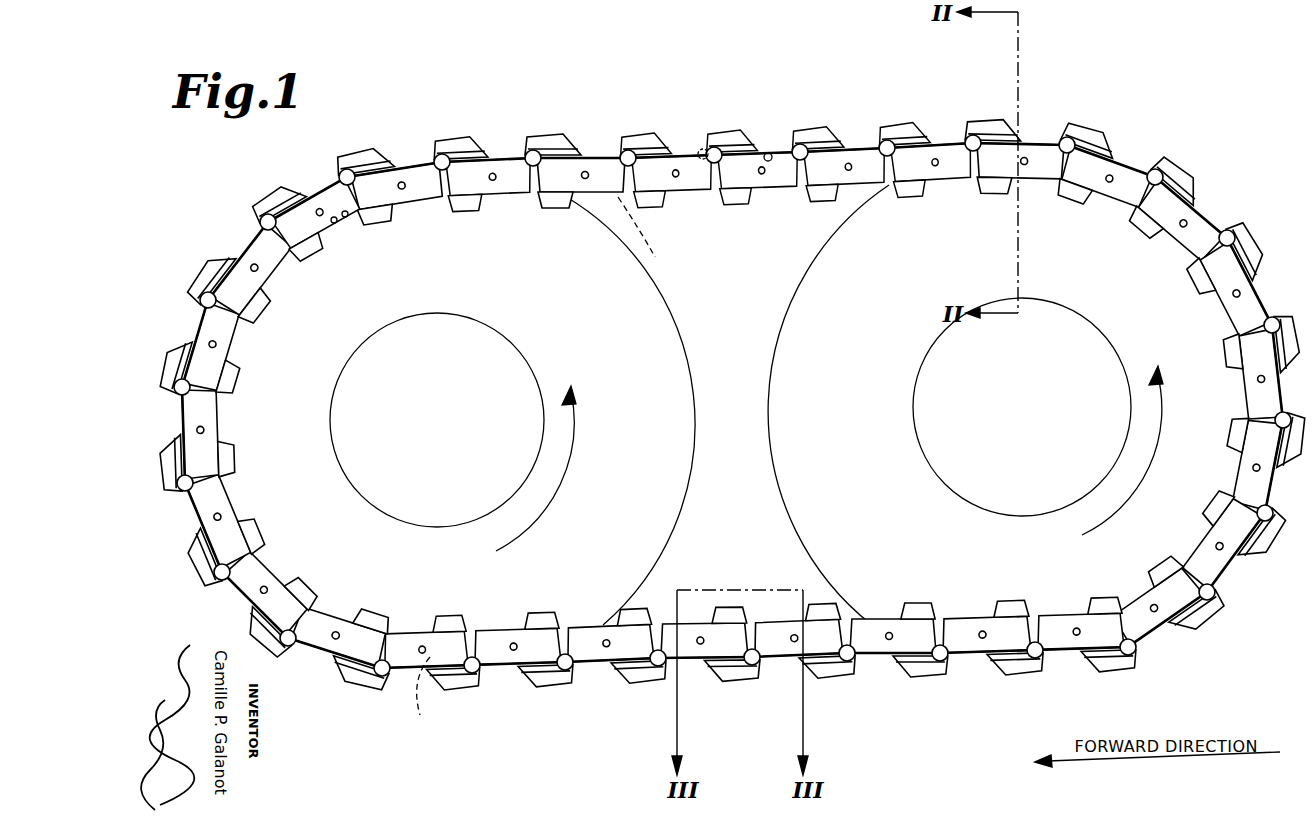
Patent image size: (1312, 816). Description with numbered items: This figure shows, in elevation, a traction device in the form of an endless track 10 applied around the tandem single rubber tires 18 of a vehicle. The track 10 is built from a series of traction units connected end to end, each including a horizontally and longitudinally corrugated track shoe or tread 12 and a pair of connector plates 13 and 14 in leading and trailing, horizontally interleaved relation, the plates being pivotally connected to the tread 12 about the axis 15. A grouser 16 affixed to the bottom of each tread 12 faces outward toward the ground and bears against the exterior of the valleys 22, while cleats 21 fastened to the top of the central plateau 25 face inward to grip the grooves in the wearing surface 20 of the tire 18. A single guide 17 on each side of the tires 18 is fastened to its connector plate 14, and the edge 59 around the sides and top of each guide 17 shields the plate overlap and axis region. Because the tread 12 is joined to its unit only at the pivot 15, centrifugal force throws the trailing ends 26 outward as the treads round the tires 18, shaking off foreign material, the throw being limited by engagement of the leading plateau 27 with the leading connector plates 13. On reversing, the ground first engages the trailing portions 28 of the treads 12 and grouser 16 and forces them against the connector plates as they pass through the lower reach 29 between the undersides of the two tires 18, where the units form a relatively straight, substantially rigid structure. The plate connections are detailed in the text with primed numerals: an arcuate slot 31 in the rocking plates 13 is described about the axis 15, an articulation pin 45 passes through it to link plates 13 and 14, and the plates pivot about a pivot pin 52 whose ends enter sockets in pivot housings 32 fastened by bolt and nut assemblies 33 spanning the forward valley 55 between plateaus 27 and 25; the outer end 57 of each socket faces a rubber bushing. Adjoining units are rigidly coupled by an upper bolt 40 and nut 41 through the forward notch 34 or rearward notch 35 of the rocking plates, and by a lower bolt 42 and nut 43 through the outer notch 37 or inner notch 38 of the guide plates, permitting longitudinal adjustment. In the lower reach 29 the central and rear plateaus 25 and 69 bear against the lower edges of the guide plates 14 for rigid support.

The track 10 is at (420, 160).
The track shoe or tread 12 is at (392, 153).
The leading connector plate 13 is at (287, 257).
The trailing connector plate 14 is at (1097, 167).
The axis 15 is at (530, 155).
The grouser 16 is at (263, 200).
The guide 17 is at (303, 240).
The tire 18 is at (686, 457).
The wearing surface 20 is at (668, 546).
The cleat 21 is at (425, 696).
The valley 22 is at (1266, 511).
The central plateau 25 is at (200, 360).
The trailing end 26 is at (227, 250).
The leading plateau 27 is at (250, 247).
The trailing portion 28 is at (1183, 633).
The lower reach 29 is at (697, 647).
The arcuate slot 31 is at (785, 183).
The pivot housing 32 is at (625, 157).
The bolt and nut assembly 33 is at (613, 155).
The forward notch 34 is at (335, 224).
The rearward notch 35 is at (348, 217).
The outer notch 37 is at (503, 155).
The inner notch 38 is at (497, 162).
The upper bolt 40 is at (690, 180).
The nut 41 is at (860, 150).
The lower bolt 42 is at (768, 153).
The nut 43 is at (763, 157).
The articulation pin 45 is at (640, 173).
The pivot pin 52 is at (702, 150).
The forward valley 55 is at (198, 308).
The outer end of socket 57 is at (343, 176).
The edge 59 is at (748, 193).
The rear plateau 69 is at (1267, 273).